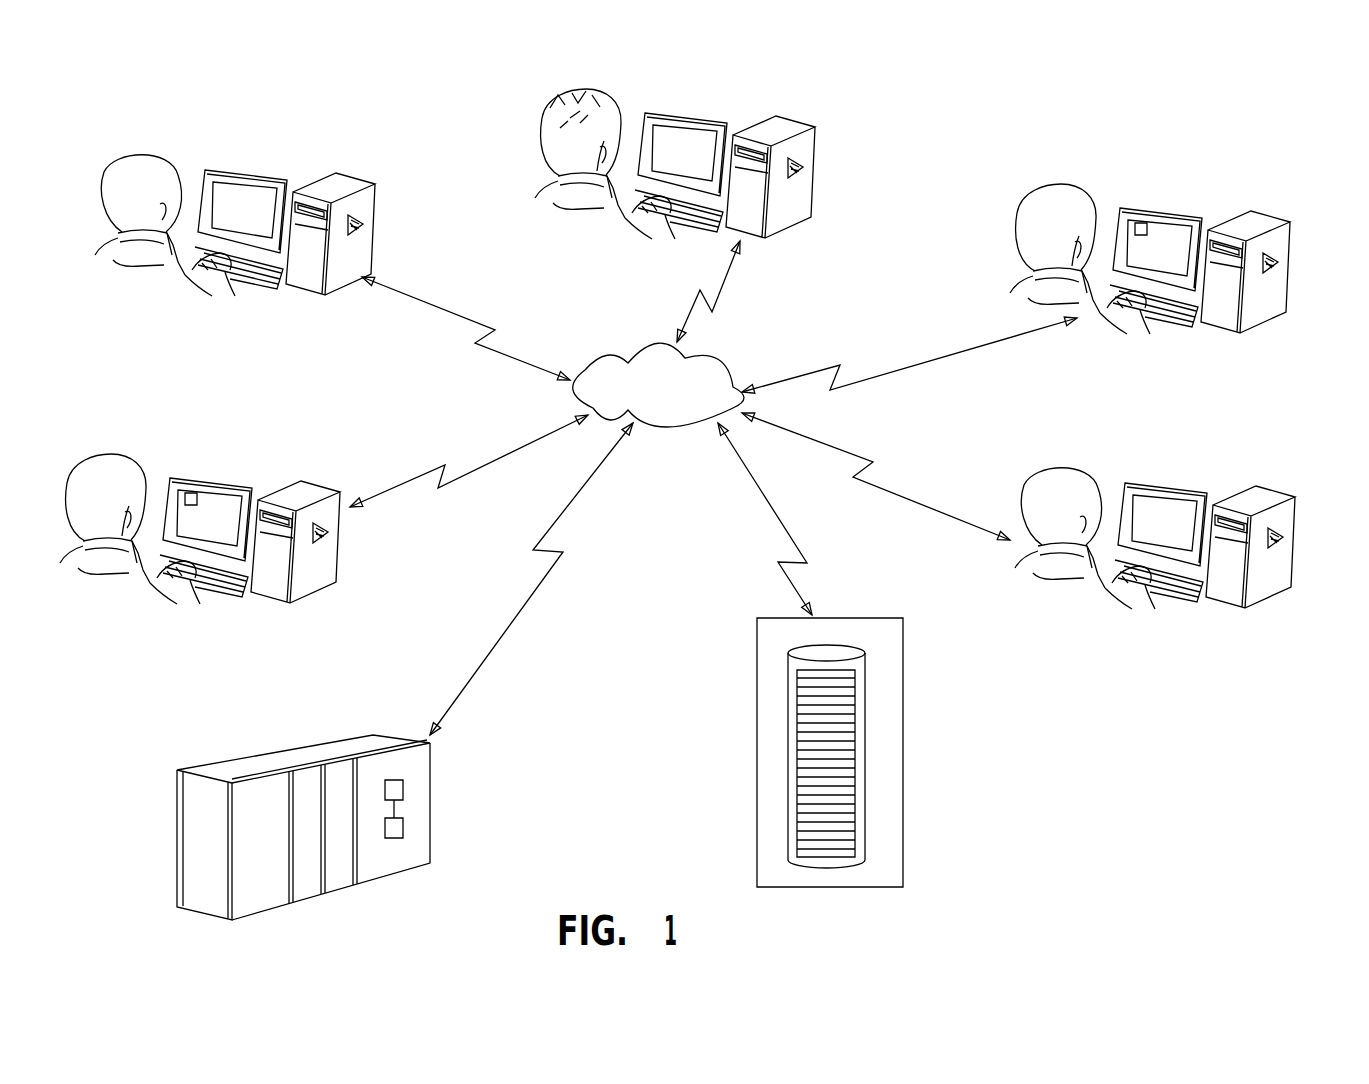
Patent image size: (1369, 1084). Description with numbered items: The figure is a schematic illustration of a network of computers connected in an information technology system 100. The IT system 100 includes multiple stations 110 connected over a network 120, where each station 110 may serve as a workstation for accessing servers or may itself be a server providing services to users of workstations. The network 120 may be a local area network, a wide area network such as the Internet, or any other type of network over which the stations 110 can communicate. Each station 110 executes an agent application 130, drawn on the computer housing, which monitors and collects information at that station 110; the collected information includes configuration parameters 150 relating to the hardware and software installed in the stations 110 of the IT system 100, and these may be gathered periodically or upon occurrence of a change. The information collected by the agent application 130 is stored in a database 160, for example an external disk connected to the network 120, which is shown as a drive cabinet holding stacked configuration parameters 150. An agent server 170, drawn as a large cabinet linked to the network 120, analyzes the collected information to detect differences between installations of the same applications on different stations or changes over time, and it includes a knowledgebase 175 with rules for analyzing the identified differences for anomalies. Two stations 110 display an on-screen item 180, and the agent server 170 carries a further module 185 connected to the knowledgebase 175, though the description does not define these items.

The information technology system 100 is at (377, 103).
The station 110 is at (243, 68).
The network 120 is at (727, 363).
The agent application 130 is at (828, 353).
The configuration parameters 150 is at (855, 722).
The database 160 is at (865, 752).
The agent server 170 is at (330, 807).
The knowledgebase 175 is at (405, 823).
The user interface 180 is at (673, 336).
The server module 185 is at (405, 785).